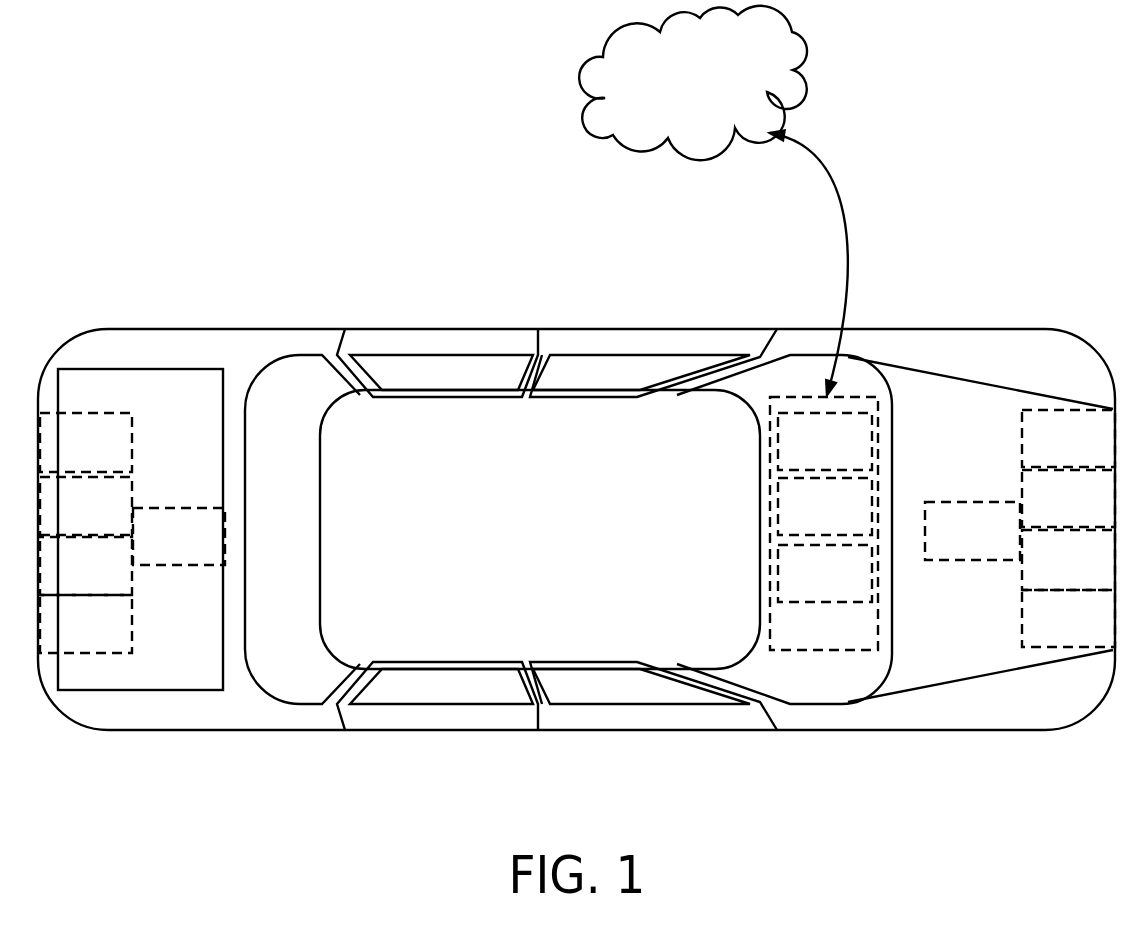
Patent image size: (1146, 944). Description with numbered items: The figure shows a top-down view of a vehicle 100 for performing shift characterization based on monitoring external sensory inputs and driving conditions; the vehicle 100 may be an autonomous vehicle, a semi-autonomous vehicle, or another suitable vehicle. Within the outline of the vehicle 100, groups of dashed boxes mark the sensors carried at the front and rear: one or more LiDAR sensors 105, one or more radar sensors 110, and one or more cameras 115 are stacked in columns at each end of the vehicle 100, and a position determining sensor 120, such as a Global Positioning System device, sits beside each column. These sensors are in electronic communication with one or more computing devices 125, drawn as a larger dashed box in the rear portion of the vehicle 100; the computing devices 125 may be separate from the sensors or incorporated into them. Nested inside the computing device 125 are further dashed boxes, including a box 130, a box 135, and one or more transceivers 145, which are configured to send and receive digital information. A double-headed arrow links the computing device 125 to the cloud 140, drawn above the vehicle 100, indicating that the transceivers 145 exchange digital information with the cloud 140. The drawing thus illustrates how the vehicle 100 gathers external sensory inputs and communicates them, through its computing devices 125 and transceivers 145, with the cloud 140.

The vehicle 100 is at (133, 329).
The LiDAR sensor 105 is at (105, 519).
The radar sensor 110 is at (105, 579).
The camera 115 is at (105, 455).
The position determining sensor 120 is at (198, 549).
The computing device 125 is at (844, 639).
The processor 130 is at (844, 454).
The memory 135 is at (844, 519).
The cloud 140 is at (714, 96).
The transceiver 145 is at (844, 585).